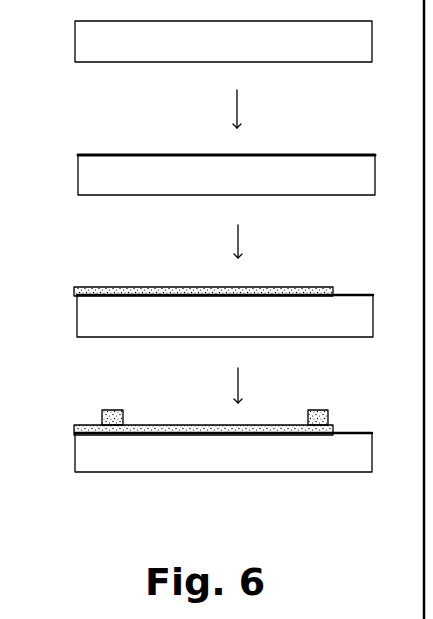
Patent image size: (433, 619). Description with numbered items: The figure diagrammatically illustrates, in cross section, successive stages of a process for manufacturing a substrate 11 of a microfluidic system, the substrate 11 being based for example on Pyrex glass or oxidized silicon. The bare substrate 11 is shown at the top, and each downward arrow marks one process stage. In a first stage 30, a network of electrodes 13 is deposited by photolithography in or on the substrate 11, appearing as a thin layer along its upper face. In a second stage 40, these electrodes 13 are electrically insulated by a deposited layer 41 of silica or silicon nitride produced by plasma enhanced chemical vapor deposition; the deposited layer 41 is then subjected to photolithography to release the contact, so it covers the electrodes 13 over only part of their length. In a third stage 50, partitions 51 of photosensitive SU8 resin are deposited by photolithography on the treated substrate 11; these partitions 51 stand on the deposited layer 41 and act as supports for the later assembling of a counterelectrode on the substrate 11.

The substrate 11 is at (72, 53).
The network of electrodes 13 is at (282, 153).
The first stage 30 is at (238, 100).
The second stage 40 is at (239, 232).
The deposited layer 41 is at (128, 293).
The third stage 50 is at (239, 372).
The partitions 51 is at (105, 418).